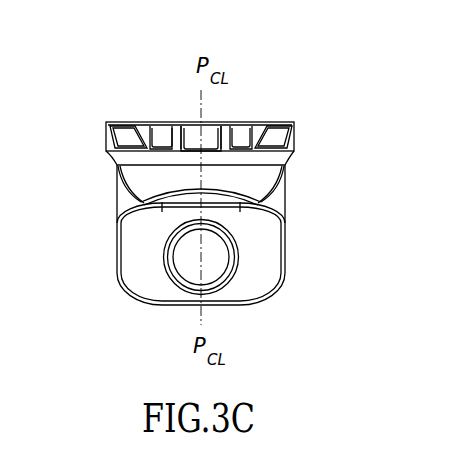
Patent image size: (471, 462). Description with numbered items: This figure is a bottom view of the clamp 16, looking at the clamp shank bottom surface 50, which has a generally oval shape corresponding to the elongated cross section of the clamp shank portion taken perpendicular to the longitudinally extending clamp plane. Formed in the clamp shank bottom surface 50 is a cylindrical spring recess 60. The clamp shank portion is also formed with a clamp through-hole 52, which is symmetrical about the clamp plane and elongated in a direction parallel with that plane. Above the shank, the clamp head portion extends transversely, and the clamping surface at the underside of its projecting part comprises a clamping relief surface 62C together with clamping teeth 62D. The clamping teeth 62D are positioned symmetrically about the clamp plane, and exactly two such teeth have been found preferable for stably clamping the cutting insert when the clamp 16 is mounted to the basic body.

The clamp 16 is at (338, 61).
The clamping teeth 62D is at (160, 135).
The clamping relief surface 62C is at (263, 178).
The clamp shank bottom surface 50 is at (267, 282).
The clamp through-hole 52 is at (233, 235).
The cylindrical spring recess 60 is at (213, 268).